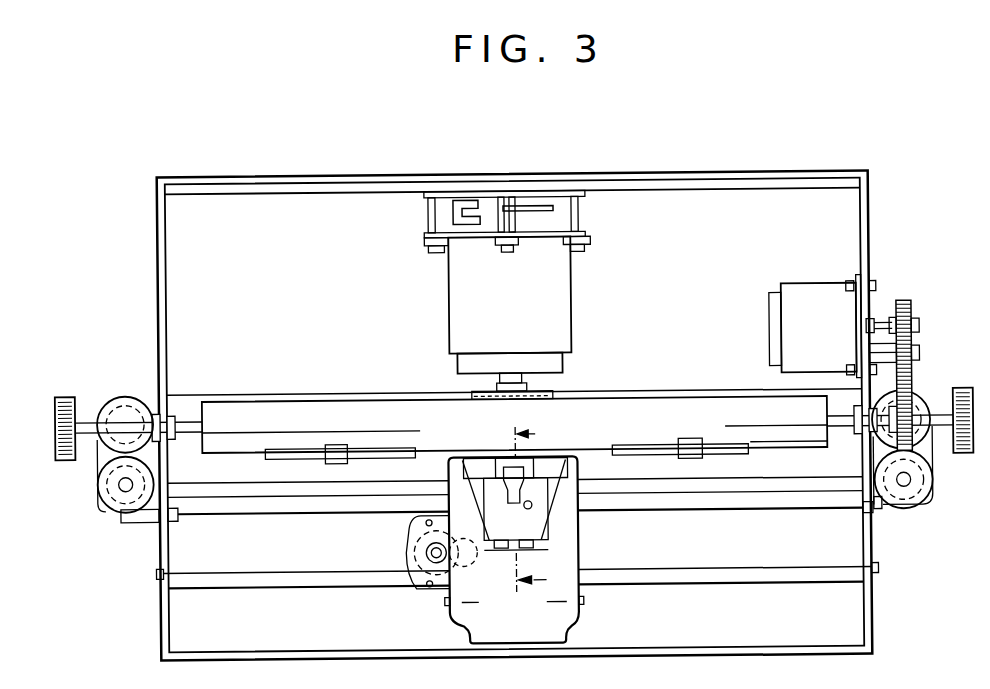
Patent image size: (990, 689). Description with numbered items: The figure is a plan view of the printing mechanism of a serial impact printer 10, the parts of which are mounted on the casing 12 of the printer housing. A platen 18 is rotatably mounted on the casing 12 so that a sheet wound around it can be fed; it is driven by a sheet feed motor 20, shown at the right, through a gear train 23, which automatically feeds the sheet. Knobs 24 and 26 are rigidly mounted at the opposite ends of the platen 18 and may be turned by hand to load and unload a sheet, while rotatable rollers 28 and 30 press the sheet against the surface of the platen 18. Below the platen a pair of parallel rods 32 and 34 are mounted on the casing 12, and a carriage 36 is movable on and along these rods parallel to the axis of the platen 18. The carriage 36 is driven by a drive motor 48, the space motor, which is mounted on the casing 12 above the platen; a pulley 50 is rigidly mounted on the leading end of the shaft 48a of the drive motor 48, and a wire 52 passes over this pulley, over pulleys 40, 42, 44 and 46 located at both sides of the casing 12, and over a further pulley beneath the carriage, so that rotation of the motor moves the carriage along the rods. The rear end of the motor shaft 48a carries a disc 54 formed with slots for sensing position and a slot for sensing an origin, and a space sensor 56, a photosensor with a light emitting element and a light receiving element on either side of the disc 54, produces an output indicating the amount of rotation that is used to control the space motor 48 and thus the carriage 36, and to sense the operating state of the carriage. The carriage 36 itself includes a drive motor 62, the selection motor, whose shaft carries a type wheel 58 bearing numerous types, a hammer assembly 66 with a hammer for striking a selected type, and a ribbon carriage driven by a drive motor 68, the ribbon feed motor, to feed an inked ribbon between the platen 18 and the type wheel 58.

The serial impact printer 10 is at (893, 210).
The casing 12 is at (283, 174).
The platen 18 is at (288, 410).
The sheet feed motor 20 is at (790, 322).
The gear train 23 is at (915, 304).
The knob 24 is at (66, 393).
The knob 26 is at (962, 459).
The rotatable roller 28 is at (340, 461).
The rotatable roller 30 is at (686, 441).
The rod 32 is at (790, 491).
The rod 34 is at (745, 584).
The carriage 36 is at (437, 603).
The pulley 40 is at (101, 504).
The pulley 42 is at (127, 395).
The pulley 44 is at (907, 517).
The pulley 46 is at (923, 399).
The drive motor 48 is at (465, 285).
The motor shaft 48a is at (493, 378).
The pulley 50 is at (555, 395).
The wire 52 is at (267, 515).
The disc 54 is at (540, 197).
The space sensor 56 is at (462, 191).
The type wheel 58 is at (543, 458).
The drive motor 62 is at (532, 528).
The hammer assembly 66 is at (503, 470).
The drive motor 68 is at (407, 552).